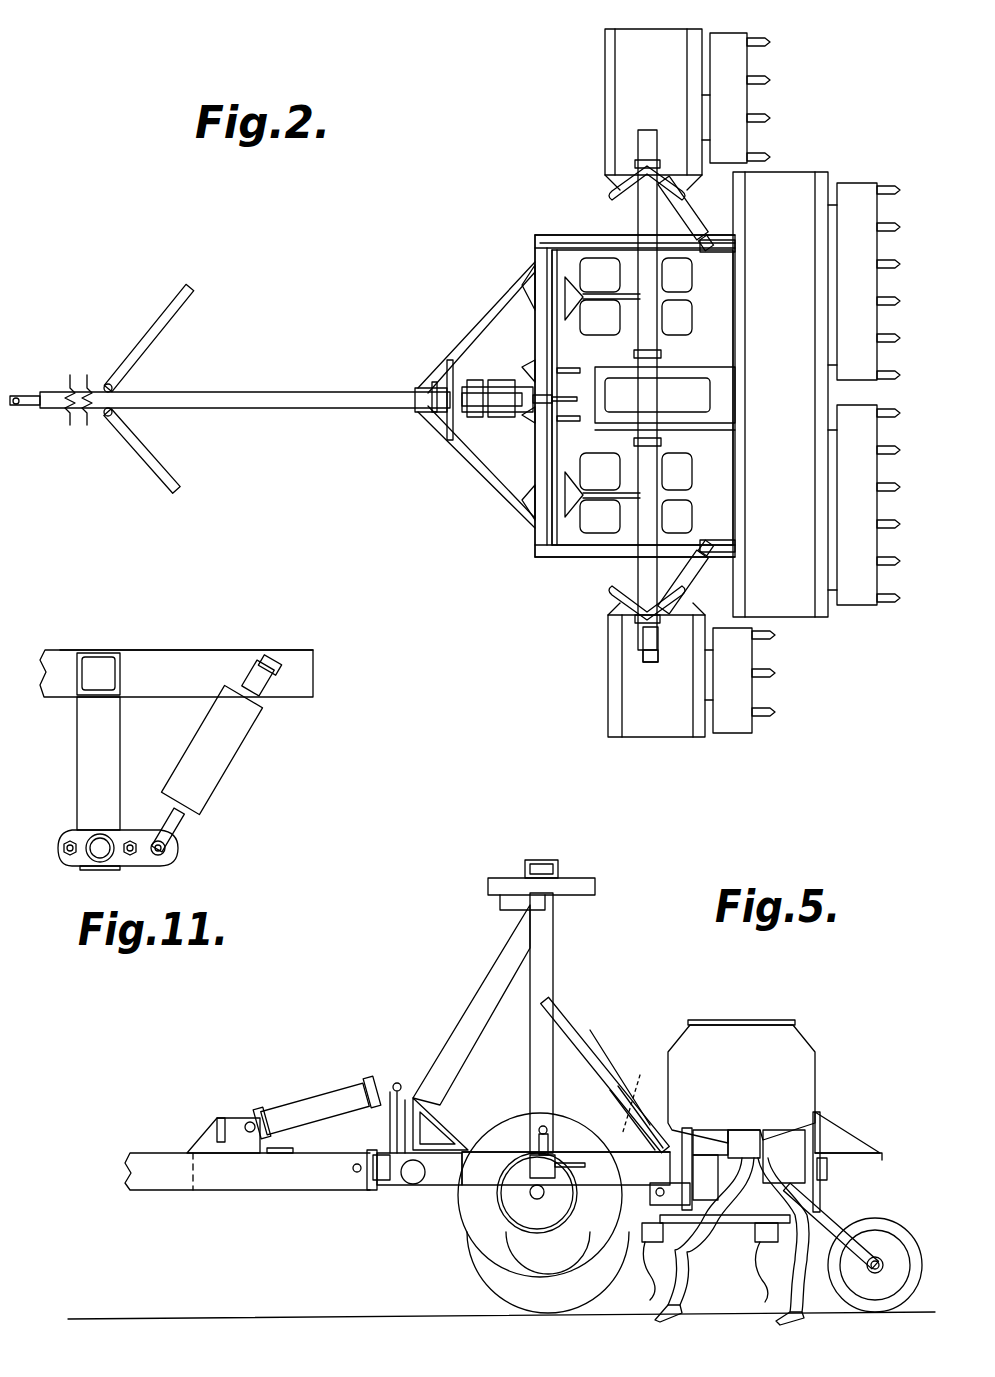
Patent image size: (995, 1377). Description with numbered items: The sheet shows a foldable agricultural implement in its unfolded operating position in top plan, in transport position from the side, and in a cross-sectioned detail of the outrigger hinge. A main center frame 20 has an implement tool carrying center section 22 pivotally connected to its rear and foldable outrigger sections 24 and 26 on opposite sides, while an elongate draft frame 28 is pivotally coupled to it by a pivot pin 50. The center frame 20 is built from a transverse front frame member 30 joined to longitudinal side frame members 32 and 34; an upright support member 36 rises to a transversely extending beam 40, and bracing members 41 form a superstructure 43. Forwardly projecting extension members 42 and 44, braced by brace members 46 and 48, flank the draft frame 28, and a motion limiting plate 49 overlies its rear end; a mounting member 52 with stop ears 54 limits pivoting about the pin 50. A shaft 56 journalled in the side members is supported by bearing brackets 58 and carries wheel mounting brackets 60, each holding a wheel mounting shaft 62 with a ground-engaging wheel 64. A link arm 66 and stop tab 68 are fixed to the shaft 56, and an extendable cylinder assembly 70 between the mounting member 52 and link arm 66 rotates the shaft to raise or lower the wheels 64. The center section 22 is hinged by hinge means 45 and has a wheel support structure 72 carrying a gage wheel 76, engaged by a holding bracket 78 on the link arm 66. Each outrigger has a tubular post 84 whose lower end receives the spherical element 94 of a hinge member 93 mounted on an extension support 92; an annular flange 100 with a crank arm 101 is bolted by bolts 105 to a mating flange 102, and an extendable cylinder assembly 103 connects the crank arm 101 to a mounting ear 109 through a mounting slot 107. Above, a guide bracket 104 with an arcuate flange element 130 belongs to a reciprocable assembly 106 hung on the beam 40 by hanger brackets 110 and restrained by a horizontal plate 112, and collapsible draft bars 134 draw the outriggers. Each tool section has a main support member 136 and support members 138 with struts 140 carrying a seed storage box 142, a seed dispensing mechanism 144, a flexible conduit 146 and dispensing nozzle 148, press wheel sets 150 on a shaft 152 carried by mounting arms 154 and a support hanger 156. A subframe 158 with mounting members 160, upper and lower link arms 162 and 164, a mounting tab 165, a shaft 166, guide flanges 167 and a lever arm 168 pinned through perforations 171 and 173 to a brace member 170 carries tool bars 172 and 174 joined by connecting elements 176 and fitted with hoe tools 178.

In FIG. 2, the main center frame 20 is at (535, 240).
In FIG. 11, the main center frame 20 is at (160, 652).
In FIG. 5, the main center frame 20 is at (562, 1150).
In FIG. 2, the implement tool carrying center section 22 is at (820, 170).
In FIG. 5, the implement tool carrying center section 22 is at (822, 1020).
In FIG. 2, the outrigger section 24 is at (608, 718).
In FIG. 2, the outrigger section 26 is at (605, 40).
In FIG. 2, the draft frame 28 is at (245, 393).
In FIG. 5, the draft frame 28 is at (122, 1172).
In FIG. 2, the front frame member 30 is at (535, 330).
In FIG. 5, the front frame member 30 is at (370, 1150).
In FIG. 2, the side frame member 32 is at (565, 556).
In FIG. 11, the side frame member 32 is at (312, 667).
In FIG. 5, the side frame member 32 is at (478, 1218).
In FIG. 2, the side frame member 34 is at (598, 238).
In FIG. 11, the upright support member 36 is at (88, 652).
In FIG. 5, the upright support member 36 is at (553, 958).
In FIG. 2, the transversely extending beam 40 is at (652, 664).
In FIG. 5, the transversely extending beam 40 is at (560, 866).
In FIG. 2, the bracing member 41 is at (556, 246).
In FIG. 5, the bracing member 41 is at (490, 978).
In FIG. 2, the extension member 42 is at (500, 380).
In FIG. 5, the extension member 42 is at (176, 1190).
In FIG. 5, the superstructure 43 is at (475, 921).
In FIG. 2, the extension member 44 is at (484, 412).
In FIG. 2, the hinge means 45 is at (730, 263).
In FIG. 2, the brace member 46 is at (495, 318).
In FIG. 2, the brace member 48 is at (482, 476).
In FIG. 2, the motion limiting plate 49 is at (472, 380).
In FIG. 5, the motion limiting plate 49 is at (282, 1150).
In FIG. 5, the pivot pin 50 is at (352, 1167).
In FIG. 2, the mounting member 52 is at (425, 406).
In FIG. 5, the mounting member 52 is at (200, 1138).
In FIG. 2, the stop ear 54 is at (448, 380).
In FIG. 5, the stop ear 54 is at (222, 1116).
In FIG. 2, the shaft 56 is at (555, 262).
In FIG. 5, the shaft 56 is at (375, 1188).
In FIG. 2, the bearing bracket 58 is at (578, 370).
In FIG. 2, the wheel mounting bracket 60 is at (606, 300).
In FIG. 5, the wheel mounting bracket 60 is at (455, 1195).
In FIG. 5, the wheel mounting shaft 62 is at (538, 1199).
In FIG. 2, the ground-engaging wheel 64 is at (692, 272).
In FIG. 5, the ground-engaging wheel 64 is at (492, 1240).
In FIG. 2, the link arm 66 is at (540, 404).
In FIG. 5, the link arm 66 is at (392, 1082).
In FIG. 5, the stop tab 68 is at (395, 1188).
In FIG. 2, the extendable cylinder assembly 70 is at (470, 414).
In FIG. 5, the extendable cylinder assembly 70 is at (320, 1098).
In FIG. 2, the wheel support structure 72 is at (740, 425).
In FIG. 5, the wheel support structure 72 is at (572, 1210).
In FIG. 2, the gage wheel 76 is at (738, 395).
In FIG. 5, the gage wheel 76 is at (515, 1295).
In FIG. 2, the holding bracket 78 is at (657, 395).
In FIG. 5, the holding bracket 78 is at (432, 1096).
In FIG. 11, the tubular post 84 is at (98, 862).
In FIG. 11, the extension support 92 is at (88, 736).
In FIG. 5, the extension support 92 is at (530, 1166).
In FIG. 5, the hinge member 93 is at (532, 1136).
In FIG. 5, the spherical element 94 is at (540, 1125).
In FIG. 11, the annular flange 100 is at (72, 862).
In FIG. 11, the crank arm 101 is at (148, 858).
In FIG. 11, the mating flange 102 is at (132, 835).
In FIG. 2, the extendable cylinder assembly 103 is at (690, 218).
In FIG. 11, the extendable cylinder assembly 103 is at (232, 750).
In FIG. 2, the guide bracket 104 is at (615, 198).
In FIG. 5, the guide bracket 104 is at (596, 888).
In FIG. 11, the bolt 105 is at (60, 842).
In FIG. 2, the reciprocable assembly 106 is at (660, 347).
In FIG. 11, the mounting slot 107 is at (282, 650).
In FIG. 11, the mounting ear 109 is at (258, 662).
In FIG. 2, the hanger bracket 110 is at (648, 170).
In FIG. 5, the hanger bracket 110 is at (540, 858).
In FIG. 5, the horizontal plate 112 is at (528, 868).
In FIG. 5, the arcuate flange element 130 is at (546, 906).
In FIG. 2, the collapsible draft bar 134 is at (176, 305).
In FIG. 5, the main support member 136 is at (668, 1178).
In FIG. 5, the support member 138 is at (835, 1146).
In FIG. 5, the support strut 140 is at (700, 1125).
In FIG. 2, the seed storage box 142 is at (630, 68).
In FIG. 5, the seed storage box 142 is at (745, 1035).
In FIG. 5, the seed dispensing mechanism 144 is at (772, 1128).
In FIG. 5, the flexible conduit 146 is at (785, 1225).
In FIG. 5, the dispensing nozzle 148 is at (735, 1315).
In FIG. 2, the press wheel set 150 is at (775, 55).
In FIG. 5, the press wheel set 150 is at (900, 1230).
In FIG. 5, the shaft 152 is at (875, 1273).
In FIG. 5, the press wheel mounting arm 154 is at (852, 1215).
In FIG. 5, the support hanger 156 is at (828, 1168).
In FIG. 5, the subframe 158 is at (612, 1313).
In FIG. 5, the mounting member 160 is at (745, 1128).
In FIG. 5, the upper link arm 162 is at (703, 1128).
In FIG. 5, the lower link arm 164 is at (686, 1245).
In FIG. 5, the mounting tab 165 is at (612, 1220).
In FIG. 5, the shaft 166 is at (677, 1122).
In FIG. 5, the guide flange 167 is at (755, 1156).
In FIG. 5, the lever arm 168 is at (578, 1017).
In FIG. 5, the brace member 170 is at (626, 1118).
In FIG. 5, the perforation 171 is at (644, 1097).
In FIG. 5, the tool bar 172 is at (645, 1248).
In FIG. 5, the perforation 173 is at (620, 1077).
In FIG. 5, the tool bar 174 is at (798, 1250).
In FIG. 5, the connecting element 176 is at (755, 1250).
In FIG. 5, the hoe tool 178 is at (748, 1330).